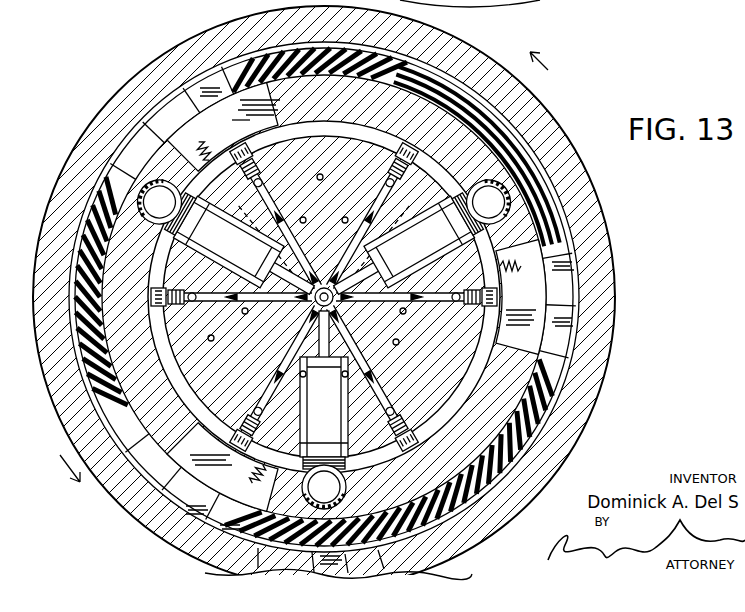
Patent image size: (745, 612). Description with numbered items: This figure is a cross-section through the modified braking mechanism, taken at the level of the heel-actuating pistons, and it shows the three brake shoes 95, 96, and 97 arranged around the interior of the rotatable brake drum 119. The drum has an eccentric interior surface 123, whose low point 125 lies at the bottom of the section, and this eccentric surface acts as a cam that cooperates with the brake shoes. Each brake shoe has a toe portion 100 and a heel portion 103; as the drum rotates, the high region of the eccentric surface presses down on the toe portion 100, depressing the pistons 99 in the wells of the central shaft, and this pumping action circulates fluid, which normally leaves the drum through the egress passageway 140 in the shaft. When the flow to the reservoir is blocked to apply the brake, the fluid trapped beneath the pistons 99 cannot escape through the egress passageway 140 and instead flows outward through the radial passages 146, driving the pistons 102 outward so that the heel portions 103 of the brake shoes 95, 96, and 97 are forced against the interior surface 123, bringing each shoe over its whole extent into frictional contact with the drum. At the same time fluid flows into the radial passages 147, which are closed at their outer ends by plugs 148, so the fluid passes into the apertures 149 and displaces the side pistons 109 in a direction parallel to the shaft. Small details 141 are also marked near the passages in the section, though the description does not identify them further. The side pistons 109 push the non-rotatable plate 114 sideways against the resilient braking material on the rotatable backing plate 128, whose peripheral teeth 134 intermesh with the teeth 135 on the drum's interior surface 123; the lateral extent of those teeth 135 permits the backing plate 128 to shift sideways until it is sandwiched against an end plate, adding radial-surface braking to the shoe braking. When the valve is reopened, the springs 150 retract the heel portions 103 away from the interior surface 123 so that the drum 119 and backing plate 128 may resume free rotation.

The brake shoe 95 is at (444, 151).
The brake shoe 96 is at (452, 451).
The brake shoe 97 is at (99, 325).
The piston 99 is at (336, 156).
The toe portion 100 is at (568, 377).
The piston 102 is at (212, 251).
The heel portion 103 is at (182, 128).
The side piston 109 is at (345, 176).
The plate 114 is at (240, 105).
The brake drum 119 is at (564, 118).
The eccentric interior surface 123 is at (578, 265).
The low point 125 is at (482, 3).
The backing plate 128 is at (160, 505).
The teeth 134 is at (188, 100).
The teeth 135 is at (217, 80).
The egress passageway 140 is at (334, 303).
The pivot 141 is at (320, 180).
The radial passage 146 is at (298, 248).
The radial passage 147 is at (303, 217).
The plug 148 is at (256, 146).
The aperture 149 is at (275, 165).
The spring 150 is at (222, 160).